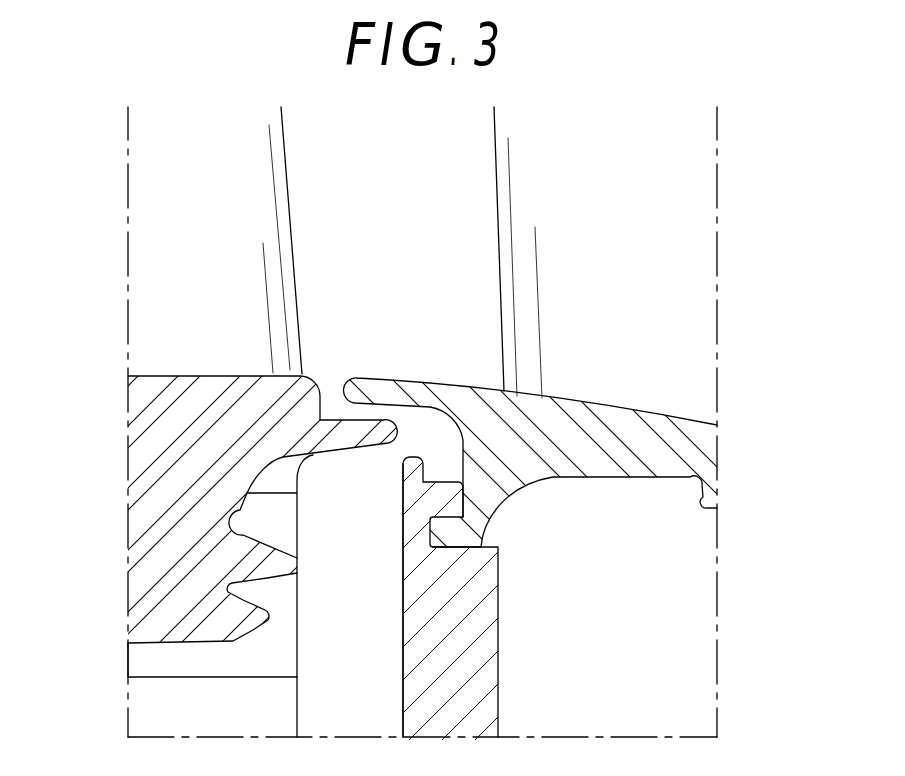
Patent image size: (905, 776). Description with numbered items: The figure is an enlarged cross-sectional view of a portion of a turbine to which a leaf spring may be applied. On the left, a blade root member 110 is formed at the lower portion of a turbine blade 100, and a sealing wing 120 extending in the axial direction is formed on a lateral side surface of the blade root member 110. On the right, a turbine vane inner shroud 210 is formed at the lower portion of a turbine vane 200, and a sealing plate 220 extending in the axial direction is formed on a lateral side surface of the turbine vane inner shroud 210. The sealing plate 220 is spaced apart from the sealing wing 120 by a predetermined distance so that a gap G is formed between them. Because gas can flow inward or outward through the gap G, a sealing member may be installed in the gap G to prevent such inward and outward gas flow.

The turbine blade 100 is at (192, 283).
The blade root member 110 is at (173, 493).
The sealing wing 120 is at (358, 432).
The turbine vane 200 is at (657, 316).
The turbine vane inner shroud 210 is at (650, 448).
The sealing plate 220 is at (380, 395).
The gap G is at (370, 412).